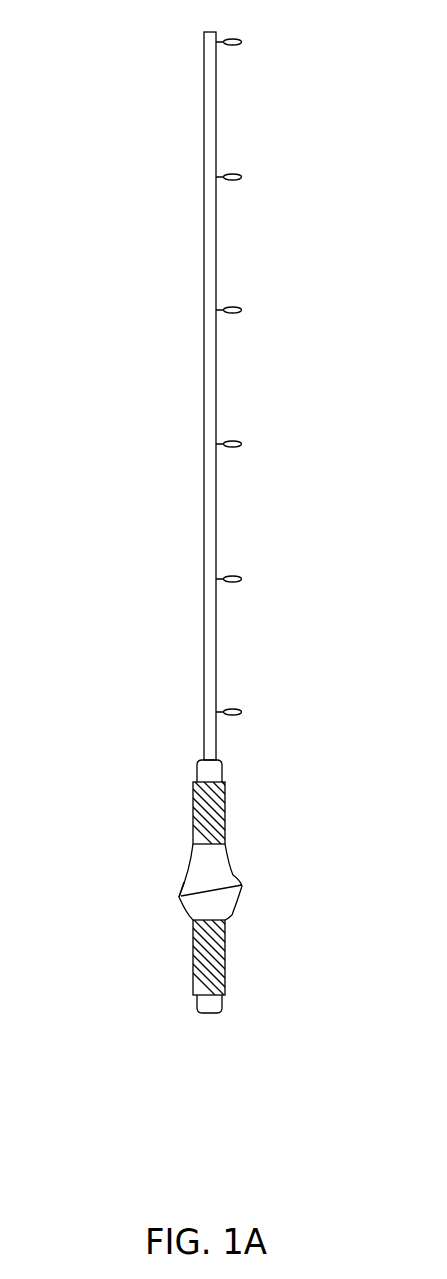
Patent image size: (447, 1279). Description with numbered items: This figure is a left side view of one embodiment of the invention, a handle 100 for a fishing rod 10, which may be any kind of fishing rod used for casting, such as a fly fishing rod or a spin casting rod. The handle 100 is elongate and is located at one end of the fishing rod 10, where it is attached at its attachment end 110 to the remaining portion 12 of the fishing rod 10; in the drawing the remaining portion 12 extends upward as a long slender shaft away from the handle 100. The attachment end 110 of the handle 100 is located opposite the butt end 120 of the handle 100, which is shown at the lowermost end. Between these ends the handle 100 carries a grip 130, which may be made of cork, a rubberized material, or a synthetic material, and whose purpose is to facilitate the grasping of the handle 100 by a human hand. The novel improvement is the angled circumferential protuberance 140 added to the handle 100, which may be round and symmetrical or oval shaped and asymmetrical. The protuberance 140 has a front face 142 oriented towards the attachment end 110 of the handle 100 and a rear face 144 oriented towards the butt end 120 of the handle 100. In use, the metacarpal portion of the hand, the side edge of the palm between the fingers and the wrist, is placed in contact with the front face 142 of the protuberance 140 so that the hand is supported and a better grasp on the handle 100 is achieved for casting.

The fishing rod 10 is at (207, 537).
The remaining portion 12 is at (203, 507).
The handle 100 is at (207, 879).
The attachment end 110 is at (222, 757).
The grip 130 is at (213, 812).
The angled circumferential protuberance 140 is at (232, 868).
The front face 142 is at (180, 893).
The rear face 144 is at (223, 900).
The butt end 120 is at (207, 1013).